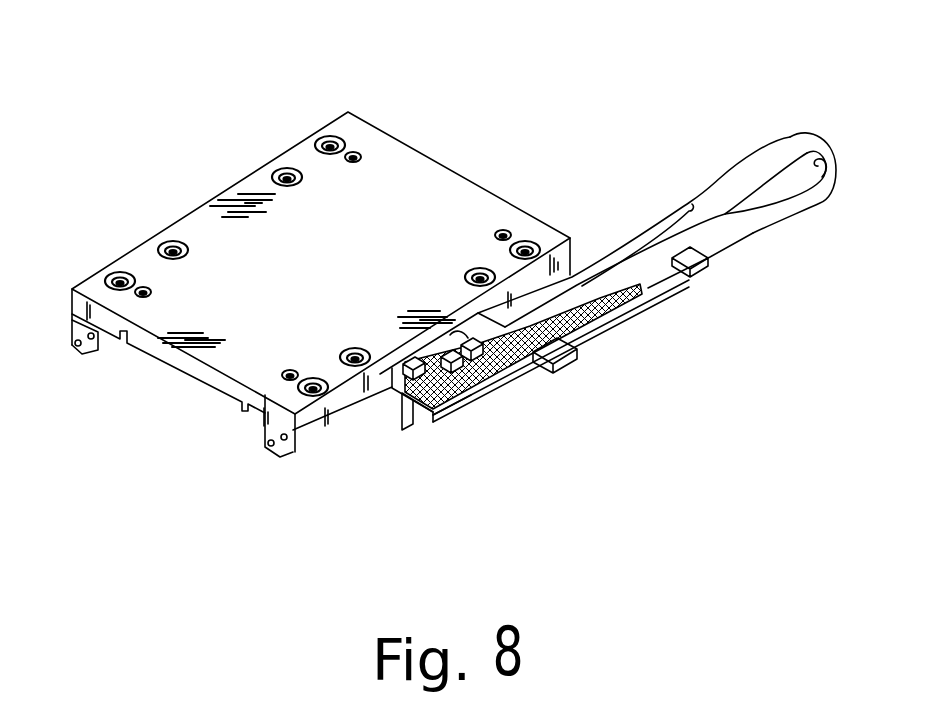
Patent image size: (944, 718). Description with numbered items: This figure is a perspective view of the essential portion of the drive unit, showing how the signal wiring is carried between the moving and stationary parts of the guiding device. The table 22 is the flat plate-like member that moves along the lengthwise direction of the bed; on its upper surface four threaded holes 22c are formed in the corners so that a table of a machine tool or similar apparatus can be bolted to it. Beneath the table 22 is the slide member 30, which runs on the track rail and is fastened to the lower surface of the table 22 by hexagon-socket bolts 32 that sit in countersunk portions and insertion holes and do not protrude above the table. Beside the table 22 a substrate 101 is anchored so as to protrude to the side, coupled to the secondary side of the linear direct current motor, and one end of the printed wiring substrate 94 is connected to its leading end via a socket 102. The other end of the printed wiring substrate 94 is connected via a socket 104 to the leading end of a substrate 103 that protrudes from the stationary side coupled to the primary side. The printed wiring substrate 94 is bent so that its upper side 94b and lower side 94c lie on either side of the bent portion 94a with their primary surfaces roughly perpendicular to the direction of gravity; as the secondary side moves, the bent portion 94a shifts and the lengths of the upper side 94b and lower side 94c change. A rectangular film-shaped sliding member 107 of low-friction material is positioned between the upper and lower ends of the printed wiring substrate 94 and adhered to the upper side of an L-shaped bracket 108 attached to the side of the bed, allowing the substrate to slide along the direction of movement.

The table 22 is at (240, 216).
The threaded holes 22c is at (288, 77).
The slide member 30 is at (72, 322).
The bolts 32 is at (73, 214).
The printed wiring substrate 94 is at (648, 152).
The bent portion 94a is at (823, 168).
The upper side 94b is at (703, 116).
The lower side 94c is at (753, 217).
The substrate 101 is at (518, 361).
The socket 102 is at (522, 364).
The substrate 103 is at (665, 305).
The socket 104 is at (700, 268).
The sliding member 107 is at (471, 388).
The bracket 108 is at (413, 425).